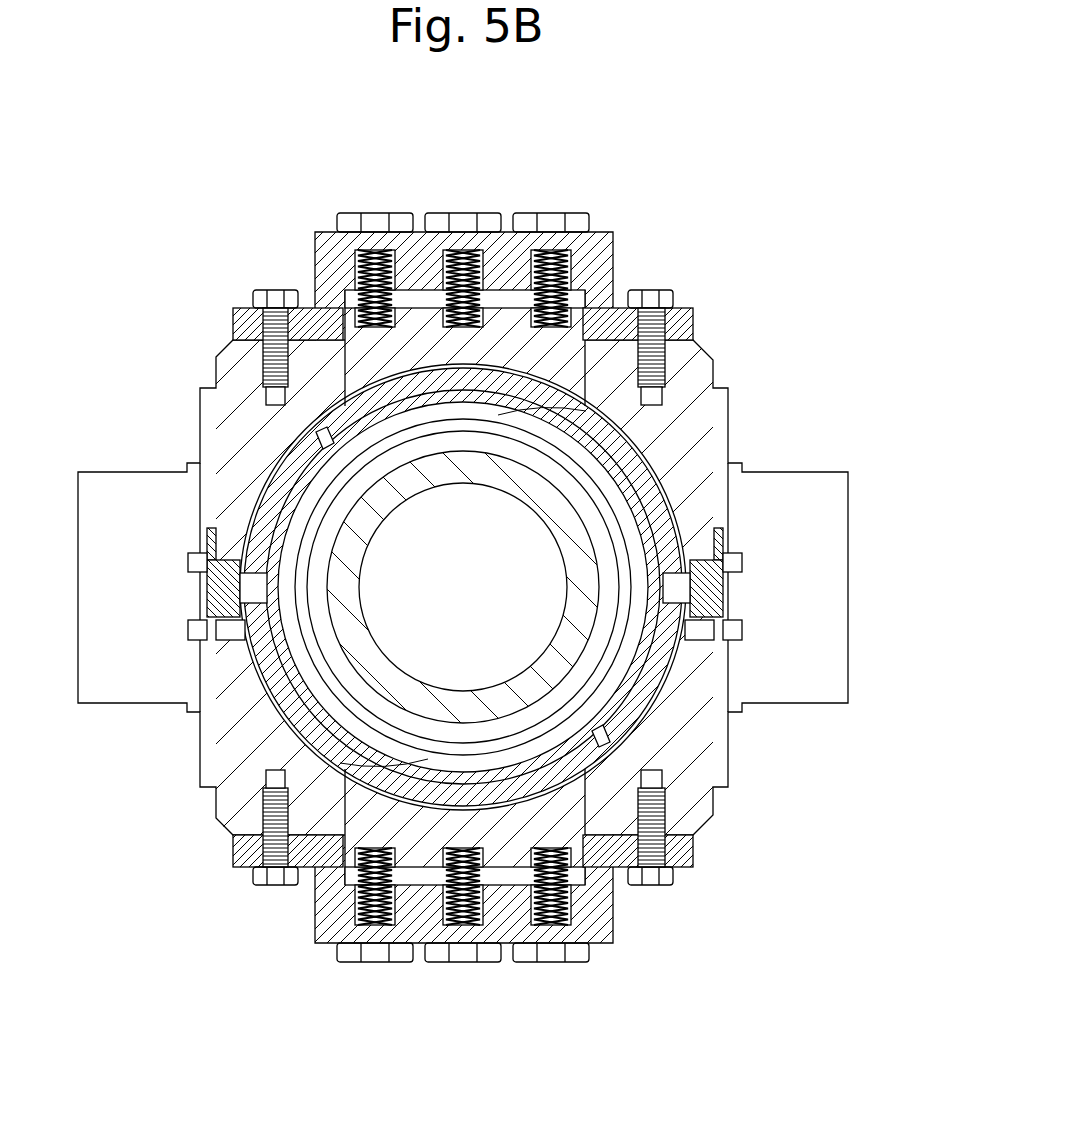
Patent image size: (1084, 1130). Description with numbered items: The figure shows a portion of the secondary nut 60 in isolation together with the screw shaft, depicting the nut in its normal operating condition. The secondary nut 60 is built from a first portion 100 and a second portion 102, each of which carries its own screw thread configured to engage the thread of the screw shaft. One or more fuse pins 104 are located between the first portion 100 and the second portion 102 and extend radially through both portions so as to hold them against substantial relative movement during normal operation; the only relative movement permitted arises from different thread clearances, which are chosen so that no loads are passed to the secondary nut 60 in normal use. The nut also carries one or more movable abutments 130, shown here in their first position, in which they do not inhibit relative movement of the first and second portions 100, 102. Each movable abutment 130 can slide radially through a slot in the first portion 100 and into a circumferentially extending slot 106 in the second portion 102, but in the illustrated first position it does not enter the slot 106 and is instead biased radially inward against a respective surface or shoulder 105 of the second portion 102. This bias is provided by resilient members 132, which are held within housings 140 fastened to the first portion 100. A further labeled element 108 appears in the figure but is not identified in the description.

The secondary nut 60 is at (790, 207).
The first portion 100 is at (693, 370).
The second portion 102 is at (630, 470).
The fuse pins 104 is at (217, 593).
The surface or shoulder 105 is at (587, 418).
The circumferentially extending slots 106 is at (323, 440).
The end flange plate and bolts 108 is at (318, 383).
The movable abutments 130 is at (418, 348).
The resilient members 132 is at (367, 252).
The housings 140 is at (598, 253).